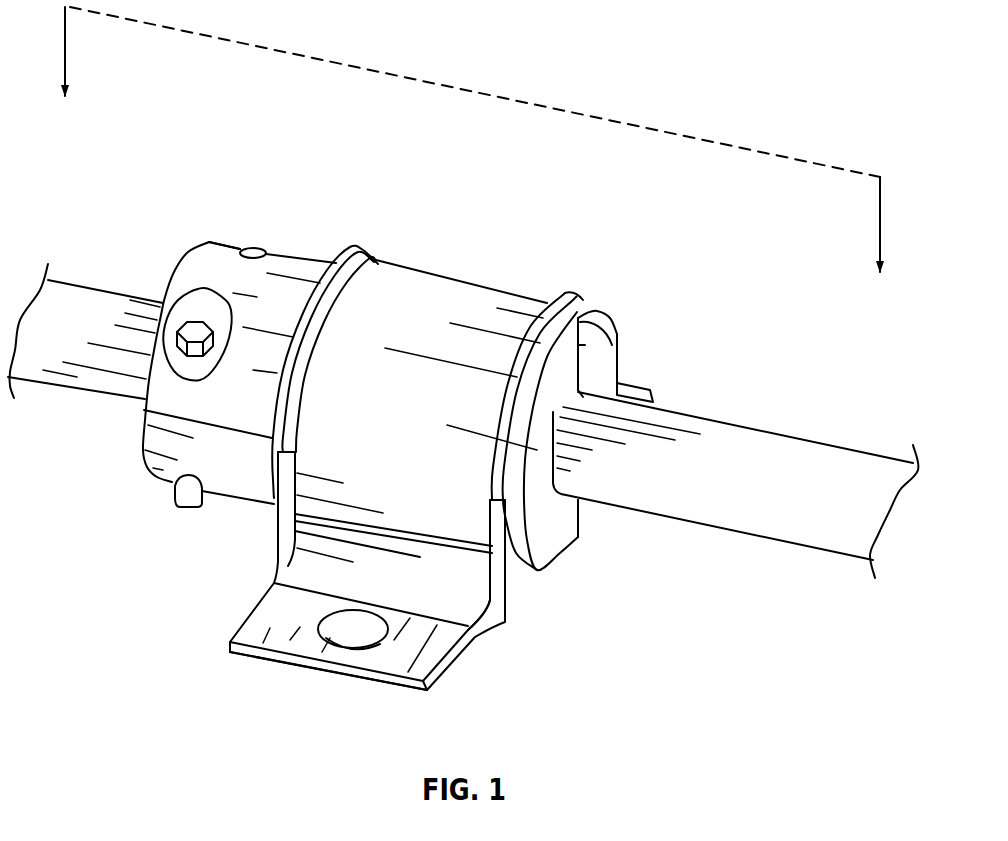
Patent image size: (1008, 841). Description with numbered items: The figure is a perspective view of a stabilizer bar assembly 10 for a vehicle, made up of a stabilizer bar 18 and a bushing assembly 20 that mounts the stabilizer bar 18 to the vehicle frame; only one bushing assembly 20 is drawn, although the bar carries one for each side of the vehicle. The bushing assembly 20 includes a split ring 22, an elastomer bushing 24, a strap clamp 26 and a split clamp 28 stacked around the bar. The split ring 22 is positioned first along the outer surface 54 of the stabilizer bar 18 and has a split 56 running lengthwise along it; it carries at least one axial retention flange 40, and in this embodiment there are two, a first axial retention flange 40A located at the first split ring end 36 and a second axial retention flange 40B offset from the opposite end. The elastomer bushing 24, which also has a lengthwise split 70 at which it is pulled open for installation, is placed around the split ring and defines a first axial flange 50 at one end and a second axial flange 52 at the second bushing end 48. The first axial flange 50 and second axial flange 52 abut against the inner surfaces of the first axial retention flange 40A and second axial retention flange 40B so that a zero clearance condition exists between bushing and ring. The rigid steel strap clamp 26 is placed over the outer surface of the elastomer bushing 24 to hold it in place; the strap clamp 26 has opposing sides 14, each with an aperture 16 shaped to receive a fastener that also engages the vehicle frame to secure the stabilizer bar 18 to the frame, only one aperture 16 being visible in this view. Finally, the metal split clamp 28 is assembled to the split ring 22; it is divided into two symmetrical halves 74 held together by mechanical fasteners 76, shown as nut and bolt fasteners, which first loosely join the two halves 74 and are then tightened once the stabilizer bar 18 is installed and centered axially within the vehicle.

The stabilizer bar assembly 10 is at (597, 80).
The opposing sides 14 is at (657, 402).
The aperture 16 is at (347, 638).
The stabilizer bar 18 is at (833, 444).
The bushing assembly 20 is at (207, 645).
The split ring 22 is at (594, 346).
The elastomer bushing 24 is at (576, 292).
The strap clamp 26 is at (432, 275).
The split clamp 28 is at (222, 240).
The first split ring end 36 is at (538, 571).
The axial retention flange 40 is at (588, 507).
The first axial retention flange 40A is at (600, 332).
The second axial retention flange 40B is at (273, 486).
The second bushing end 48 is at (374, 247).
The first axial flange 50 is at (557, 298).
The second axial flange 52 is at (355, 247).
The outer surface 54 is at (64, 282).
The split 56 is at (600, 326).
The split 70 is at (276, 484).
The two halves 74 is at (200, 266).
The mechanical fasteners 76 is at (255, 250).